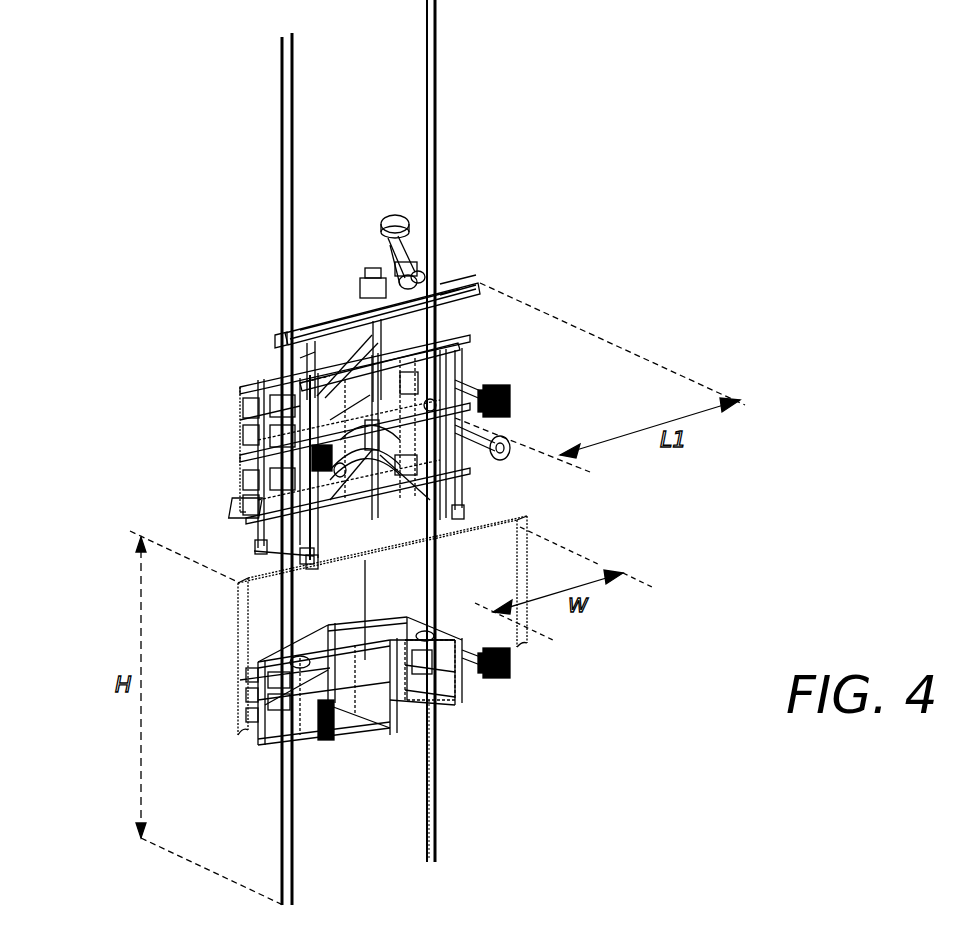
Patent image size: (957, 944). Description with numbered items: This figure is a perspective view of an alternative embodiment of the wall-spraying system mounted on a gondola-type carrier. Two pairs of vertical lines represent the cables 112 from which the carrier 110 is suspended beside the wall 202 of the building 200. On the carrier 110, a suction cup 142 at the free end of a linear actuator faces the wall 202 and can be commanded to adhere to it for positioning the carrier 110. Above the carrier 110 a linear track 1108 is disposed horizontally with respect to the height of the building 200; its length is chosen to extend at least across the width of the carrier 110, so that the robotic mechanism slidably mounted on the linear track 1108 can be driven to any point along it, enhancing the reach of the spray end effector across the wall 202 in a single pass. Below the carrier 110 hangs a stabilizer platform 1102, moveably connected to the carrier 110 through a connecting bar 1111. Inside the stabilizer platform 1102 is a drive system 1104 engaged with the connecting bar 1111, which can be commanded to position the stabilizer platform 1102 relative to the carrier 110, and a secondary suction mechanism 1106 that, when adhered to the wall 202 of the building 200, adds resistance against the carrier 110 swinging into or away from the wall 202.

The carrier 110 is at (387, 388).
The cables 112 is at (256, 551).
The suction cup 142 is at (512, 405).
The building 200 is at (496, 478).
The wall 202 is at (264, 607).
The stabilizer platform 1102 is at (247, 719).
The drive system 1104 is at (458, 694).
The secondary suction mechanism 1106 is at (512, 668).
The linear track 1108 is at (440, 290).
The connecting bar 1111 is at (365, 605).